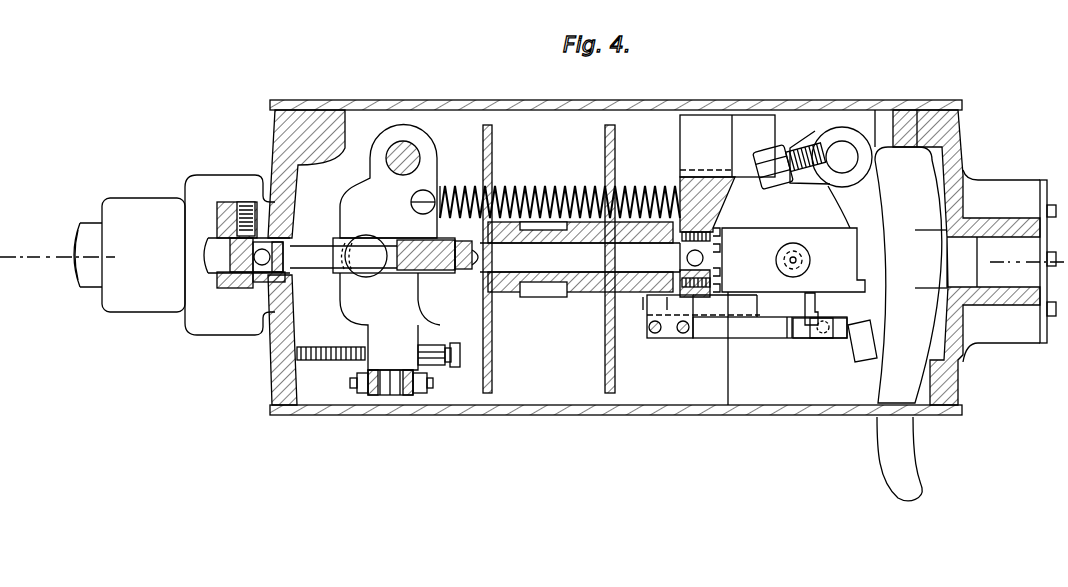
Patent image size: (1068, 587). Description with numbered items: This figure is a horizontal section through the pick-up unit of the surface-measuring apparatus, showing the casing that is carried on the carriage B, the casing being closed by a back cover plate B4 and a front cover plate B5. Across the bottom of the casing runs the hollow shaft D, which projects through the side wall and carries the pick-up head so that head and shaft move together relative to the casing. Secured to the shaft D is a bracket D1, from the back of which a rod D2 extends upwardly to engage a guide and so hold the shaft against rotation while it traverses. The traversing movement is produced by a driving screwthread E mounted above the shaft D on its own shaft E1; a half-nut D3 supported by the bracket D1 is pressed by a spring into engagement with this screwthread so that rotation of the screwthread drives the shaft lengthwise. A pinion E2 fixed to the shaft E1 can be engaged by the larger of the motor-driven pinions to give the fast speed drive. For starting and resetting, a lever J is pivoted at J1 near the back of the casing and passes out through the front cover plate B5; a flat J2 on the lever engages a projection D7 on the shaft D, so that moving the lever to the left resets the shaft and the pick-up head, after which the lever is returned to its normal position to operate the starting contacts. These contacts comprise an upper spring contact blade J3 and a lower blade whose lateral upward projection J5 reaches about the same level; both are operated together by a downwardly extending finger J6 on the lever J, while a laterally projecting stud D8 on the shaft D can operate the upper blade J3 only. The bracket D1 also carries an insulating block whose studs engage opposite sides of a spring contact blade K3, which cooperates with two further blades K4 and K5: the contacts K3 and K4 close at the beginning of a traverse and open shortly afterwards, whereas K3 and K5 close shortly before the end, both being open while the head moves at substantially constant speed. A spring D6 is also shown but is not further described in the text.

The carriage B is at (934, 142).
The back cover plate B4 is at (387, 100).
The front cover plate B5 is at (340, 415).
The hollow shaft D is at (87, 277).
The bracket D1 is at (373, 203).
The rod D2 is at (406, 150).
The half-nut D3 is at (390, 273).
The spring D6 is at (543, 192).
The projection D7 is at (785, 275).
The laterally projecting stud D8 is at (806, 325).
The driving screwthread E is at (458, 273).
The shaft of the screwthread E1 is at (292, 250).
The pinion E2 is at (663, 283).
The lever J is at (898, 460).
The pivot J1 is at (842, 150).
The flat J2 is at (857, 259).
The upper spring contact blade J3 is at (840, 338).
The lateral upward projection J5 is at (820, 338).
The finger J6 is at (860, 355).
The spring contact blade K3 is at (395, 396).
The spring contact blade K4 is at (378, 396).
The spring contact blade K5 is at (414, 396).